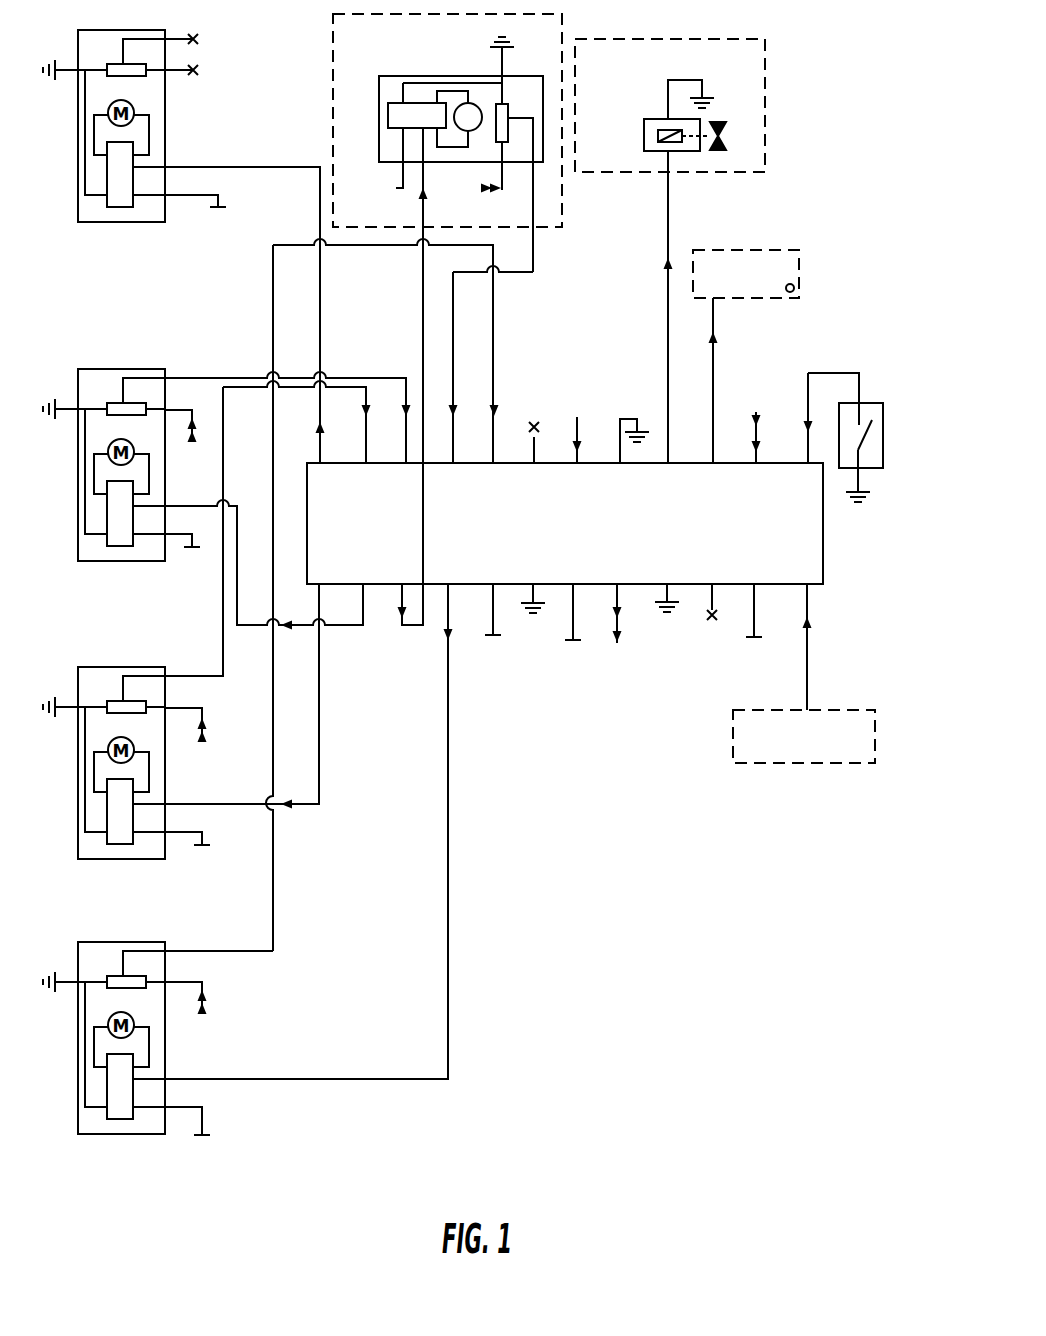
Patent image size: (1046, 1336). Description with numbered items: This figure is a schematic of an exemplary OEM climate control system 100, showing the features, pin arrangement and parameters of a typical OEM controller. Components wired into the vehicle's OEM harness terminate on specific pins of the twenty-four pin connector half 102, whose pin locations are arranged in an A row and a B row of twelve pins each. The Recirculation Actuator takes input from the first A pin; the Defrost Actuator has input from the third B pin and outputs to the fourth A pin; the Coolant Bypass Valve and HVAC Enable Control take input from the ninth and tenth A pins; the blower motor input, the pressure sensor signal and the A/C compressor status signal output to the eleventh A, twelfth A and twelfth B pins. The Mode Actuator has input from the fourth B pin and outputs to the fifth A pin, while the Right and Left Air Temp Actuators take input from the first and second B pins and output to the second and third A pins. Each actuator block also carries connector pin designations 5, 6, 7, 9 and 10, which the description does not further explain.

The OEM climate control system 100 is at (569, 819).
The twenty-four pin connector half 102 is at (823, 539).
The actuator connector pin 5 (battery +12V) 5 is at (276, 631).
The actuator connector pin 6 (position feedback) 6 is at (300, 617).
The actuator connector pin 7 (ground) 7 is at (282, 514).
The actuator connector pin 9 (control) 9 is at (341, 507).
The actuator connector pin 10 (5V reference) 10 is at (321, 539).